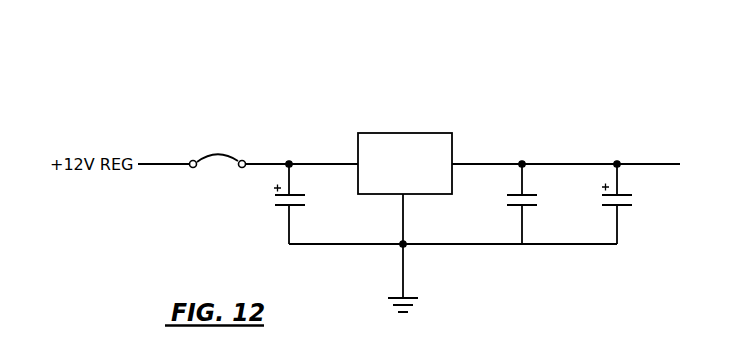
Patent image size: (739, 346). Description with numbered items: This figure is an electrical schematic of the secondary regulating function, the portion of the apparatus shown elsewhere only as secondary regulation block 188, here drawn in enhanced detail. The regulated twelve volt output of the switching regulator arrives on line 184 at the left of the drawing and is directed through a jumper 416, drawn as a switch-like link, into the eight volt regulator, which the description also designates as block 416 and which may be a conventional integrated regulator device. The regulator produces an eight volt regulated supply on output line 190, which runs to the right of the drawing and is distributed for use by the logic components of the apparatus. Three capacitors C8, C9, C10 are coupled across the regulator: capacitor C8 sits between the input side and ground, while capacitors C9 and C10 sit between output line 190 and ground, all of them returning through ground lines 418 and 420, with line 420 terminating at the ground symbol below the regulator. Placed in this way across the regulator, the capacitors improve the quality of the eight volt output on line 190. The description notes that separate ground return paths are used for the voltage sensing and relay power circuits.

The line 184 is at (170, 164).
The jumper 416 is at (308, 130).
The secondary regulation block 188 is at (439, 118).
The output line 190 is at (642, 163).
The ground line 418 is at (443, 244).
The ground line 420 is at (405, 281).
The capacitor C8 is at (299, 207).
The capacitor C9 is at (534, 207).
The capacitor C10 is at (630, 207).